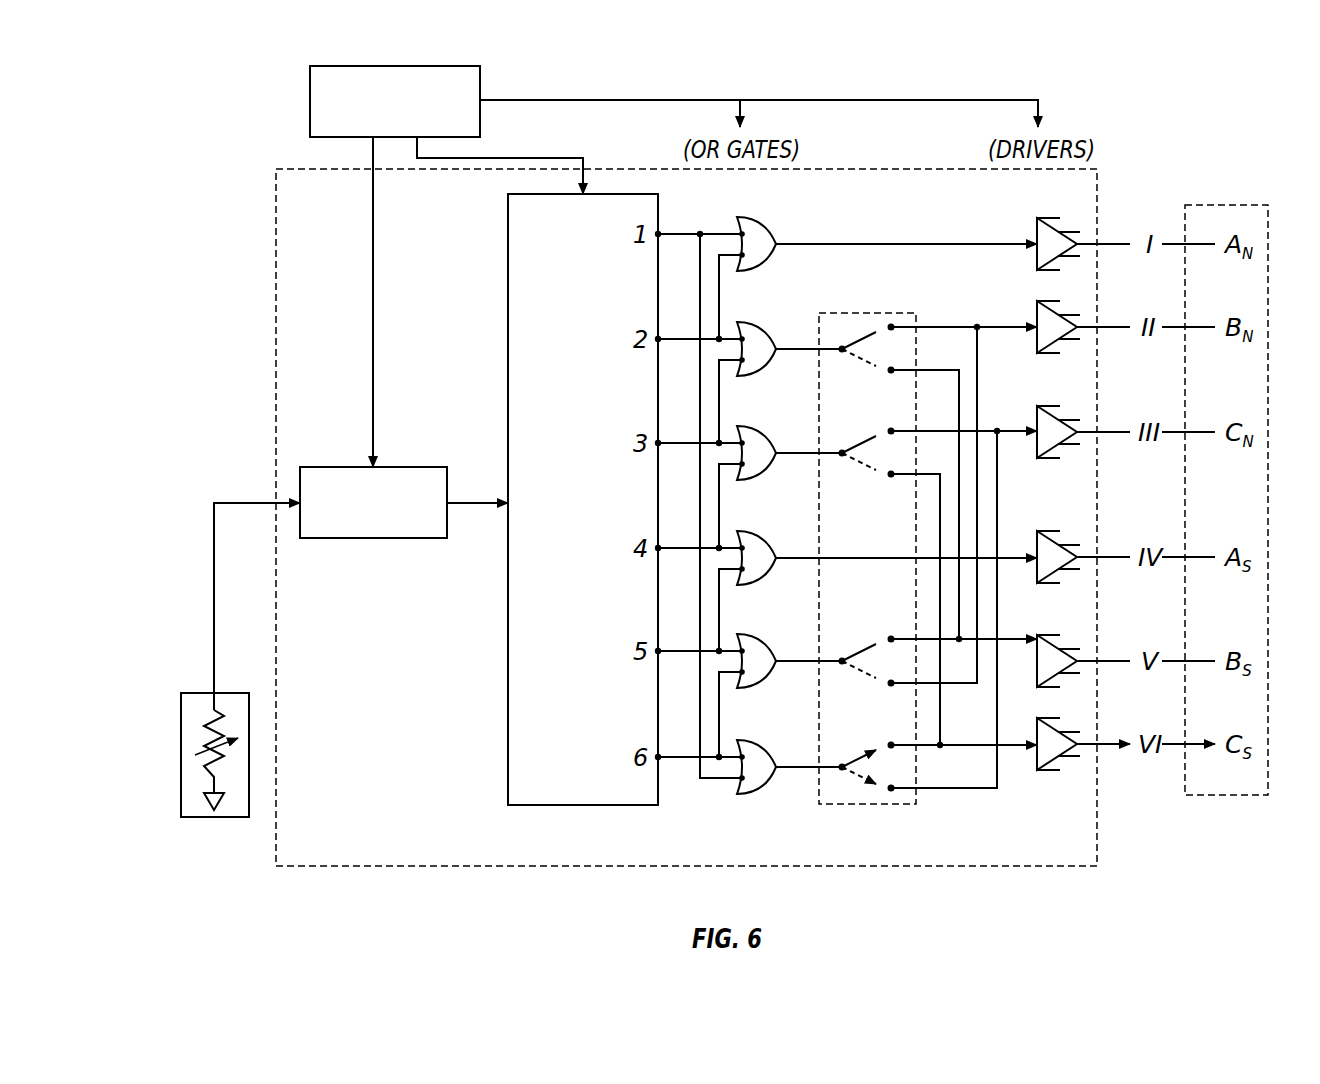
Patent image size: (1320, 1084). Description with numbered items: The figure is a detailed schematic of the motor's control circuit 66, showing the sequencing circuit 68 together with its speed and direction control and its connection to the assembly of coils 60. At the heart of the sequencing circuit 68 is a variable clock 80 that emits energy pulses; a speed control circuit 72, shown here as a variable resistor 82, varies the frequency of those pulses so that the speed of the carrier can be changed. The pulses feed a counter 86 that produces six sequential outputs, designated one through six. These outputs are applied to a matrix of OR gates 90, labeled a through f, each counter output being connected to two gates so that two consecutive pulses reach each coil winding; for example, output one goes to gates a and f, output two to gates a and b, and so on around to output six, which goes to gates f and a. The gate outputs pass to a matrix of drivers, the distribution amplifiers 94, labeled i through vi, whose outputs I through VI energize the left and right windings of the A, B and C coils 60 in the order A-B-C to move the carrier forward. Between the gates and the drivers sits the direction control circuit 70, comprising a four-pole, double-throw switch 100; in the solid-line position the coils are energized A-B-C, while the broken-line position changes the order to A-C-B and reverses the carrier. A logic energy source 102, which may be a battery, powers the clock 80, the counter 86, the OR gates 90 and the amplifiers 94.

The assembly of coils 60 is at (1226, 205).
The control circuit 66 is at (226, 252).
The sequencing circuit 68 is at (380, 868).
The direction control circuit 70 is at (918, 797).
The speed control circuit 72 is at (185, 784).
The variable clock 80 is at (375, 538).
The variable resistor 82 is at (214, 722).
The counter 86 is at (508, 640).
The OR gates 90 is at (761, 224).
The distribution amplifiers 94 is at (1020, 216).
The four-pole, double-throw switch 100 is at (870, 312).
The logic energy source 102 is at (310, 105).